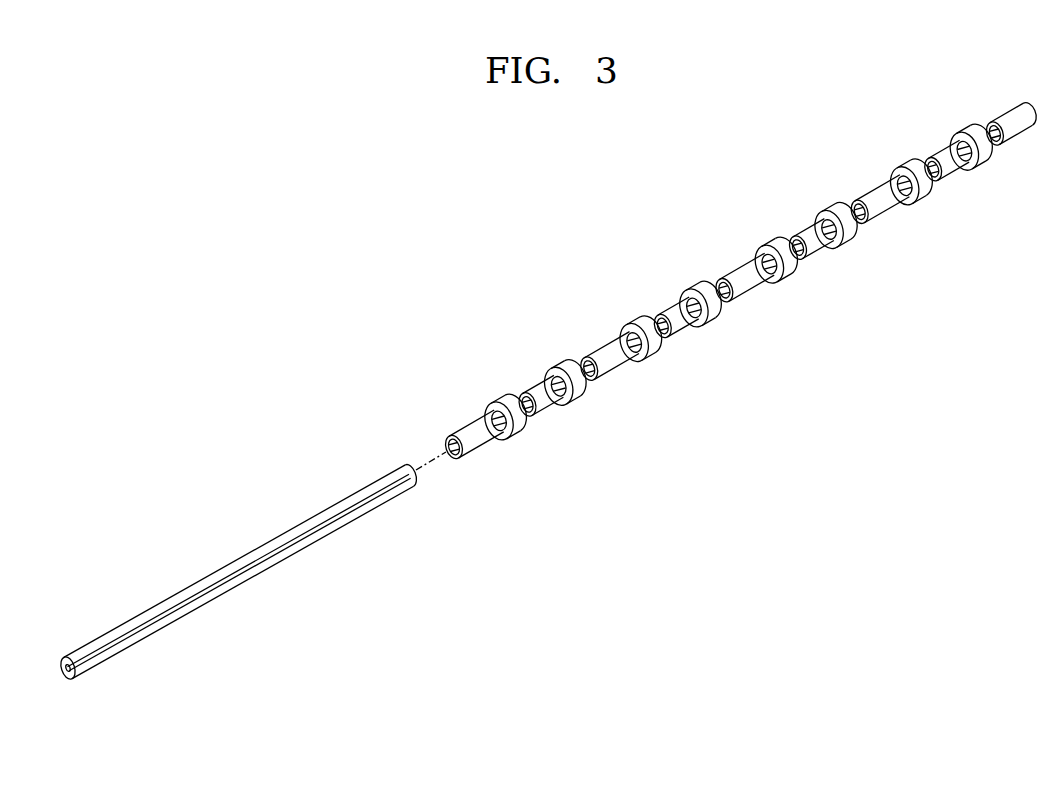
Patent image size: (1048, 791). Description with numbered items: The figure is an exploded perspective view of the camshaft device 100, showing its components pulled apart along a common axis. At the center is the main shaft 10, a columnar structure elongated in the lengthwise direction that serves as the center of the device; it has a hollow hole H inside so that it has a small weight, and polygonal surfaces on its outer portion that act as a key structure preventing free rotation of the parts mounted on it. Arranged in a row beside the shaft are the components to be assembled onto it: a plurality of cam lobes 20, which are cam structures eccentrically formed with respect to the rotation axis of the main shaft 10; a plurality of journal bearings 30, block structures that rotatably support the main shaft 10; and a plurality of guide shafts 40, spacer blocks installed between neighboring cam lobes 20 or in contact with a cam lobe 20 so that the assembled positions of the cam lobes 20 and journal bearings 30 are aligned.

The camshaft device 100 is at (343, 359).
The main shaft 10 is at (305, 544).
The hollow hole H is at (65, 679).
The cam lobe 20 is at (516, 433).
The journal bearing 30 is at (535, 389).
The guide shaft 40 is at (465, 429).